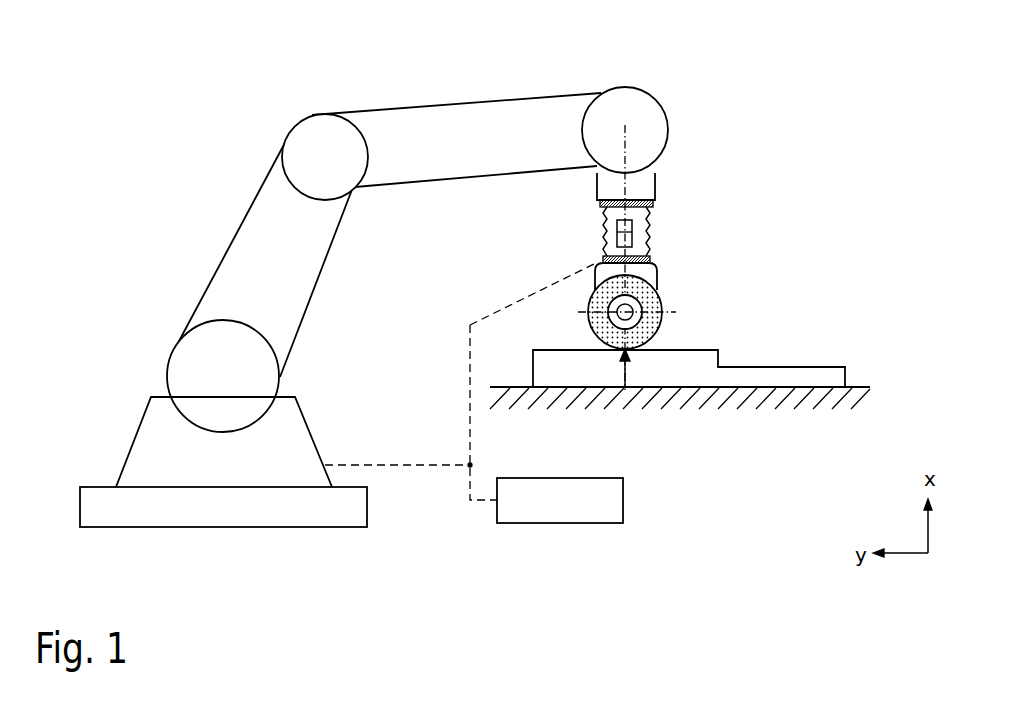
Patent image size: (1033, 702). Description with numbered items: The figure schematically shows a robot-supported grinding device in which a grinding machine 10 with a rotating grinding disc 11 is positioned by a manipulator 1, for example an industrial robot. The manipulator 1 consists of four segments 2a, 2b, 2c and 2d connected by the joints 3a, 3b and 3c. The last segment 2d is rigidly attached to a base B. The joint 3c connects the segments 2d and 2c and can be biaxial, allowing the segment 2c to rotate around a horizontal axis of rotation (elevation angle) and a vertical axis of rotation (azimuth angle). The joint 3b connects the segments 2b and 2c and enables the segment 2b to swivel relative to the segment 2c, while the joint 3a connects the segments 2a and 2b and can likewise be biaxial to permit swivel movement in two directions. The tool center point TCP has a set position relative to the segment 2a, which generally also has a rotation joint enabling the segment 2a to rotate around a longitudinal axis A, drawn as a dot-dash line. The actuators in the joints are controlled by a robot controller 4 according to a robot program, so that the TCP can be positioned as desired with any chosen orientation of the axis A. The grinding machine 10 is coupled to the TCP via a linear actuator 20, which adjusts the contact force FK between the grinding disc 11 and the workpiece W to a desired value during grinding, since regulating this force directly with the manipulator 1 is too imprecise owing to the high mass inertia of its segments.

The manipulator 1 is at (187, 84).
The segment 2a is at (617, 182).
The segment 2b is at (518, 155).
The segment 2c is at (305, 268).
The segment 2d is at (291, 438).
The joint 3a is at (650, 117).
The joint 3b is at (317, 132).
The joint 3c is at (193, 357).
The robot controller 4 is at (474, 392).
The grinding machine 10 is at (656, 273).
The grinding disc 11 is at (662, 318).
The linear actuator 20 is at (638, 240).
The longitudinal axis A is at (627, 139).
The base B is at (255, 519).
The workpiece W is at (655, 368).
The tool center point TCP is at (626, 201).
The contact force FK is at (617, 368).